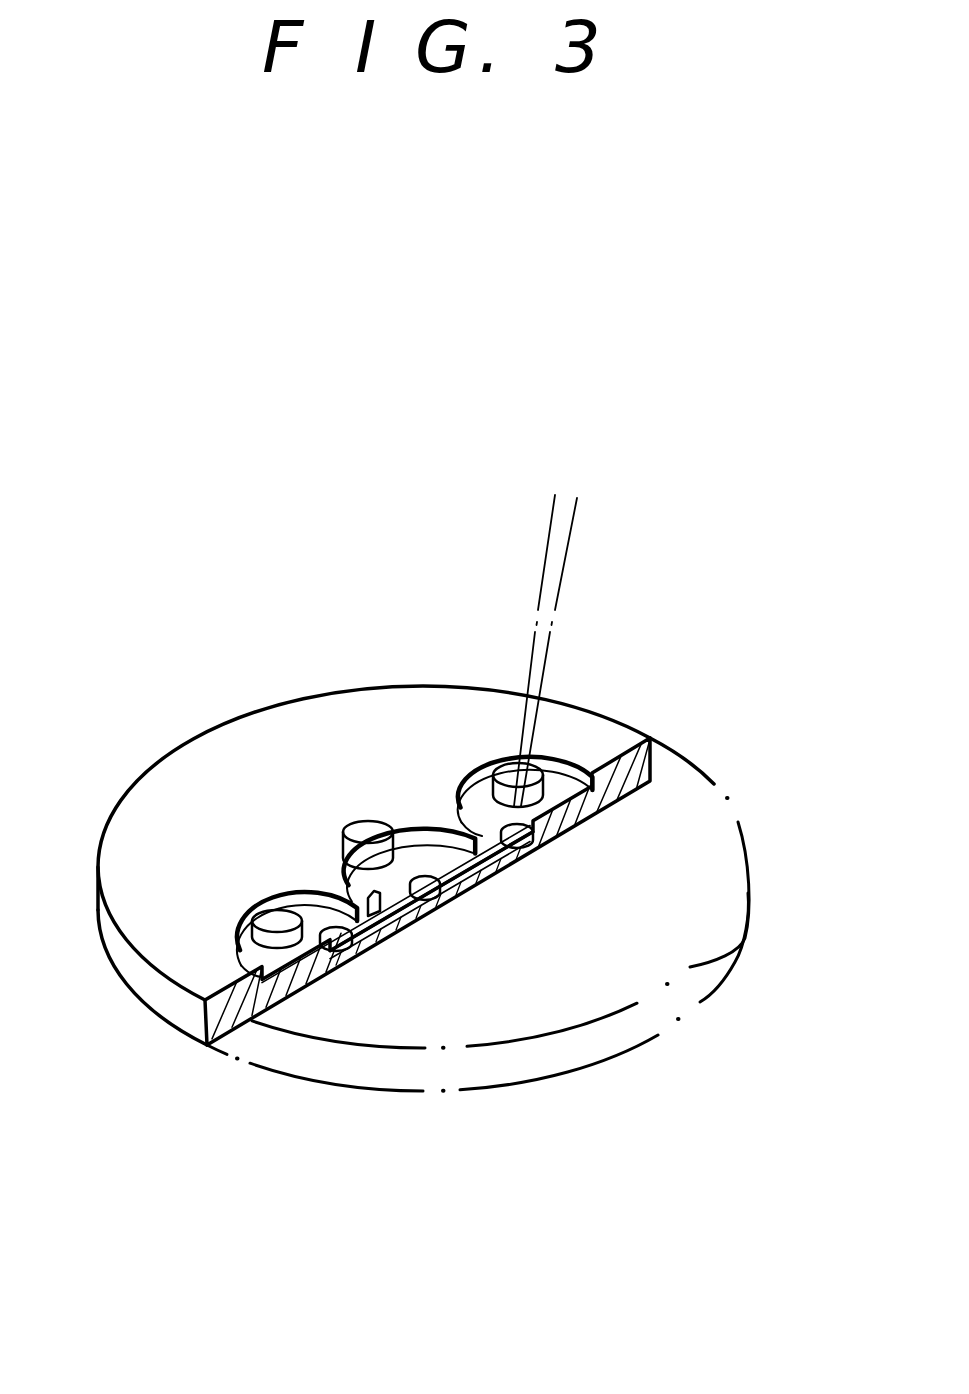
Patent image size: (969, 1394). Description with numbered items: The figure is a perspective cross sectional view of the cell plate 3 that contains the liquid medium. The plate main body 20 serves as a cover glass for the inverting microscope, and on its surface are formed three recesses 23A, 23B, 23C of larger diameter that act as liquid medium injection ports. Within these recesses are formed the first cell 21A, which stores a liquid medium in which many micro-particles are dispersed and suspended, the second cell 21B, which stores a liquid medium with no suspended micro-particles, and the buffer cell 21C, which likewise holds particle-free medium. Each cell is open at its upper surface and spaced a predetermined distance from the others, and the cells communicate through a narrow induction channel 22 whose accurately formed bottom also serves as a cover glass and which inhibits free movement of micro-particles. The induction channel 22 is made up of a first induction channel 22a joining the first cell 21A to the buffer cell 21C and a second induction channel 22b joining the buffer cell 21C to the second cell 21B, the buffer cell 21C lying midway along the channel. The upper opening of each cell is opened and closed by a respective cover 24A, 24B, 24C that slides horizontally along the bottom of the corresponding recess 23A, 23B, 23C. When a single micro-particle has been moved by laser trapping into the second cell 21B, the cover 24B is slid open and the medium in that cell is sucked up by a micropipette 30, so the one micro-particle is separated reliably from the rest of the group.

The cell plate 3 is at (140, 777).
The plate main body 20 is at (275, 753).
The first cell 21A is at (347, 955).
The second cell 21B is at (520, 850).
The buffer cell 21C is at (368, 917).
The induction channel 22 is at (441, 1074).
The first induction channel 22a is at (392, 922).
The second induction channel 22b is at (480, 847).
The recess 23A is at (240, 953).
The recess 23B is at (573, 757).
The recess 23C is at (417, 852).
The cover 24A is at (273, 918).
The cover 24B is at (508, 770).
The cover 24C is at (365, 833).
The micropipette 30 is at (567, 553).